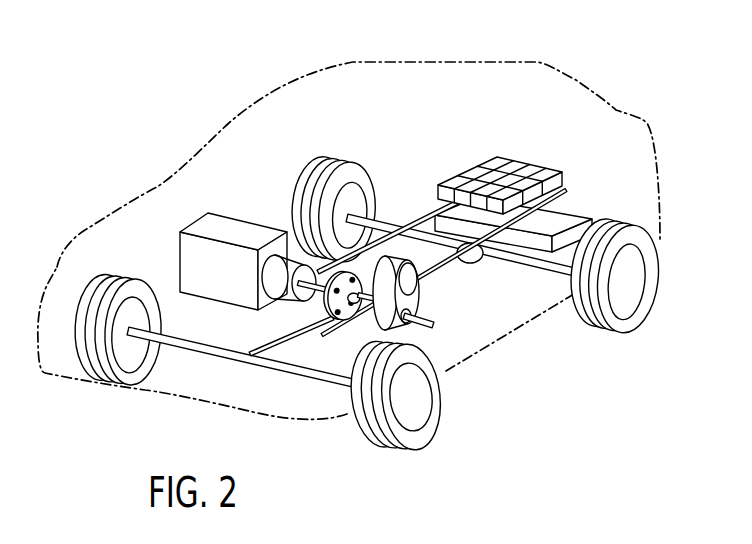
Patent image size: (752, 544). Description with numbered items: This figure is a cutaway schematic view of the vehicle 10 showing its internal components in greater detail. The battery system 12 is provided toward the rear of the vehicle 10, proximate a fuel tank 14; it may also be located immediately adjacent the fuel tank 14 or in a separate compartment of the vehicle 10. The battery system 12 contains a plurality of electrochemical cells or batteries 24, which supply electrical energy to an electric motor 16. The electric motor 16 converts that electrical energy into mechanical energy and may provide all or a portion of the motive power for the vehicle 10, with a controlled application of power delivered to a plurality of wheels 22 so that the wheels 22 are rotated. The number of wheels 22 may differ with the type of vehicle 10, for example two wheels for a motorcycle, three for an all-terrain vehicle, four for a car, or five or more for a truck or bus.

The vehicle 10 is at (548, 60).
The battery system 12 is at (517, 143).
The fuel tank 14 is at (208, 227).
The electric motor 16 is at (288, 266).
The wheels 22 is at (646, 311).
The batteries 24 is at (531, 169).